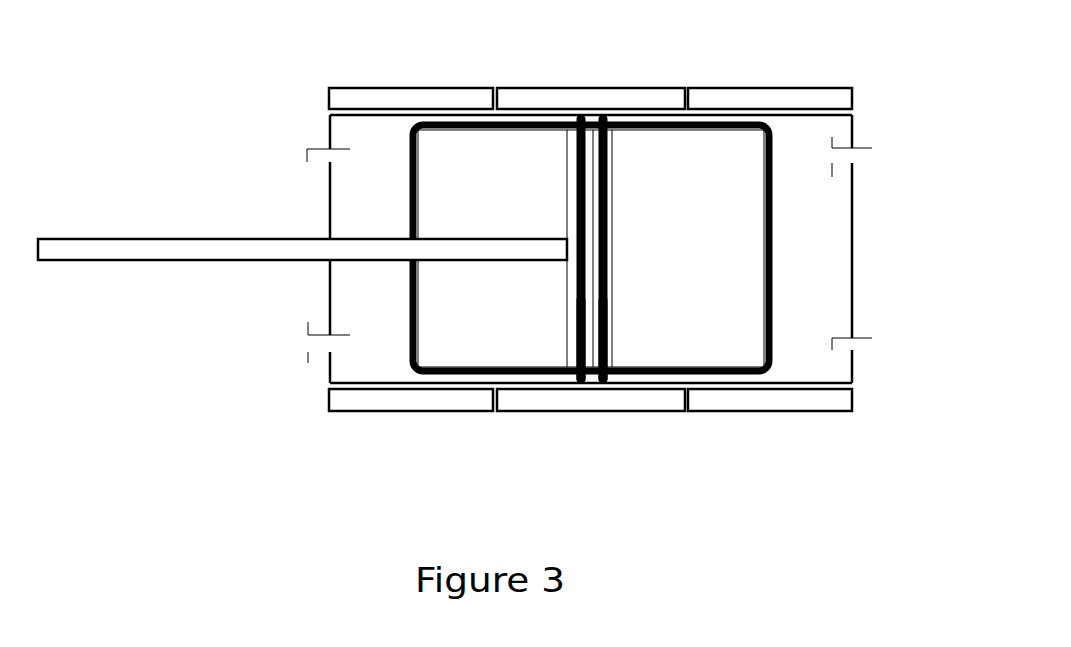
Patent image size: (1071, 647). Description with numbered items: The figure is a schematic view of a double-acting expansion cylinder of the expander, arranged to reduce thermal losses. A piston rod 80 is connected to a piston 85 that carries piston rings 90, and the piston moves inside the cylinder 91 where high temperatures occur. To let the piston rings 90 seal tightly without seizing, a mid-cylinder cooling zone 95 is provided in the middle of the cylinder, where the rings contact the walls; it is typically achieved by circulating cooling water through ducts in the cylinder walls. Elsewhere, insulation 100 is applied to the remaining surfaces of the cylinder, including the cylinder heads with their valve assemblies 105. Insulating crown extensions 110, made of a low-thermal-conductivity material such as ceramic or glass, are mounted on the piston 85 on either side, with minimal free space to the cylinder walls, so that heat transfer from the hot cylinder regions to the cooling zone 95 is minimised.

The piston rod 80 is at (227, 272).
The piston 85 is at (588, 385).
The piston rings 90 is at (602, 117).
The cylinder 91 is at (322, 218).
The mid-cylinder cooling zone 95 is at (663, 88).
The insulation 100 is at (412, 88).
The valve assemblies 105 is at (589, 250).
The insulating crown extensions 110 is at (455, 190).